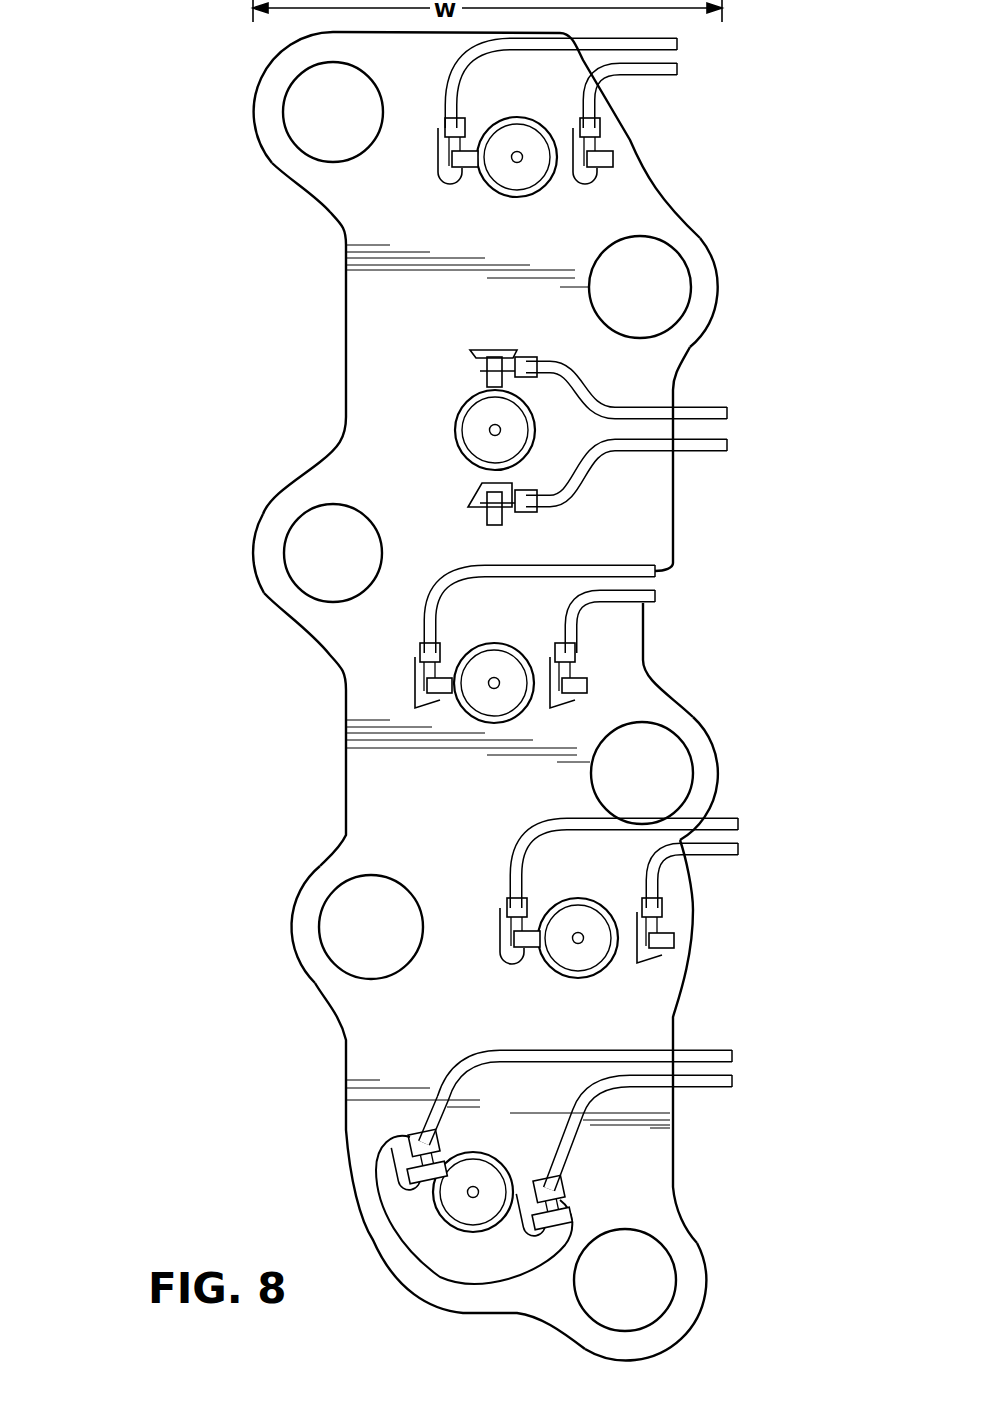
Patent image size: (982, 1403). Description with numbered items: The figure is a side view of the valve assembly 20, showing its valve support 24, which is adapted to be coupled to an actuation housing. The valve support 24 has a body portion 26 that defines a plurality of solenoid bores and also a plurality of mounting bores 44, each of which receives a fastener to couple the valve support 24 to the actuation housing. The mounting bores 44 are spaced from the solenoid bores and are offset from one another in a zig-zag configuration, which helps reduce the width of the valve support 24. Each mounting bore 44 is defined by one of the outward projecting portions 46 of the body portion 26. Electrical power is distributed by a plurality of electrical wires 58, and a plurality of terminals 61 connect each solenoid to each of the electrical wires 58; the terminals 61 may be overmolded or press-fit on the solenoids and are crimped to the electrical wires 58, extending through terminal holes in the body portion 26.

The valve assembly 20 is at (121, 99).
The valve support 24 is at (350, 270).
The body portion 26 is at (375, 333).
The mounting bores 44 is at (286, 107).
The outward projecting portions 46 is at (263, 76).
The electrical wires 58 is at (672, 44).
The terminals 61 is at (592, 128).